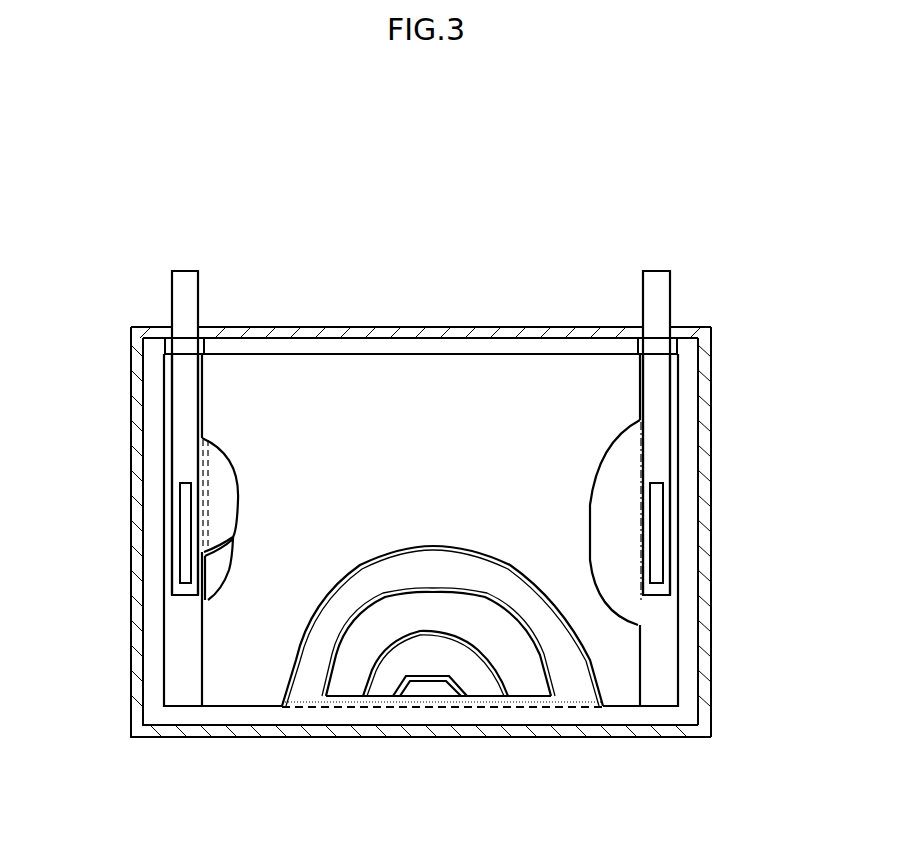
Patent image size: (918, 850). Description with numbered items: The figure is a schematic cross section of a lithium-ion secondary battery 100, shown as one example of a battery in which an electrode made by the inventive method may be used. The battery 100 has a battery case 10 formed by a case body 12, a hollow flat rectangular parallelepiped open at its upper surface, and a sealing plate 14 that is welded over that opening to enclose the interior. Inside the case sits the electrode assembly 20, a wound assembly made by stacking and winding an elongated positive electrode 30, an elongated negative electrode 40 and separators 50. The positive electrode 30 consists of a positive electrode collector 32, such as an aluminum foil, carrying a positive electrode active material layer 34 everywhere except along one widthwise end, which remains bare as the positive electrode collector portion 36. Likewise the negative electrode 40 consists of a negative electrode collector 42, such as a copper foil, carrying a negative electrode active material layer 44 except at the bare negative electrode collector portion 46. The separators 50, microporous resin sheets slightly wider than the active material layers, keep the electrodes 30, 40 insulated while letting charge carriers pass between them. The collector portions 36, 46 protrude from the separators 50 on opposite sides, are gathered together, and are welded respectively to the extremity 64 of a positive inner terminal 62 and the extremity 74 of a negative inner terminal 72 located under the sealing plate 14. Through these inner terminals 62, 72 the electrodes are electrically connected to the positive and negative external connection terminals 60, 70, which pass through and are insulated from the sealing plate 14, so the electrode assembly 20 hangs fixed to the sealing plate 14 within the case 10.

The lithium-ion secondary battery 100 is at (711, 197).
The battery case 10 is at (721, 444).
The case body 12 is at (712, 578).
The sealing plate 14 is at (545, 327).
The electrode assembly 20 is at (307, 375).
The positive electrode 30 is at (385, 685).
The positive electrode collector 32 is at (112, 535).
The positive electrode active material layer 34 is at (225, 495).
The positive electrode collector portion 36 is at (180, 680).
The negative electrode 40 is at (205, 603).
The negative electrode collector 42 is at (680, 577).
The negative electrode active material layer 44 is at (222, 580).
The negative electrode collector portion 46 is at (658, 683).
The separator 50 is at (202, 580).
The positive electrode external connection terminal 60 is at (183, 272).
The positive inner terminal 62 is at (187, 401).
The extremity of positive inner terminal 64 is at (182, 517).
The negative electrode external connection terminal 70 is at (657, 277).
The negative inner terminal 72 is at (660, 397).
The extremity of negative inner terminal 74 is at (663, 515).